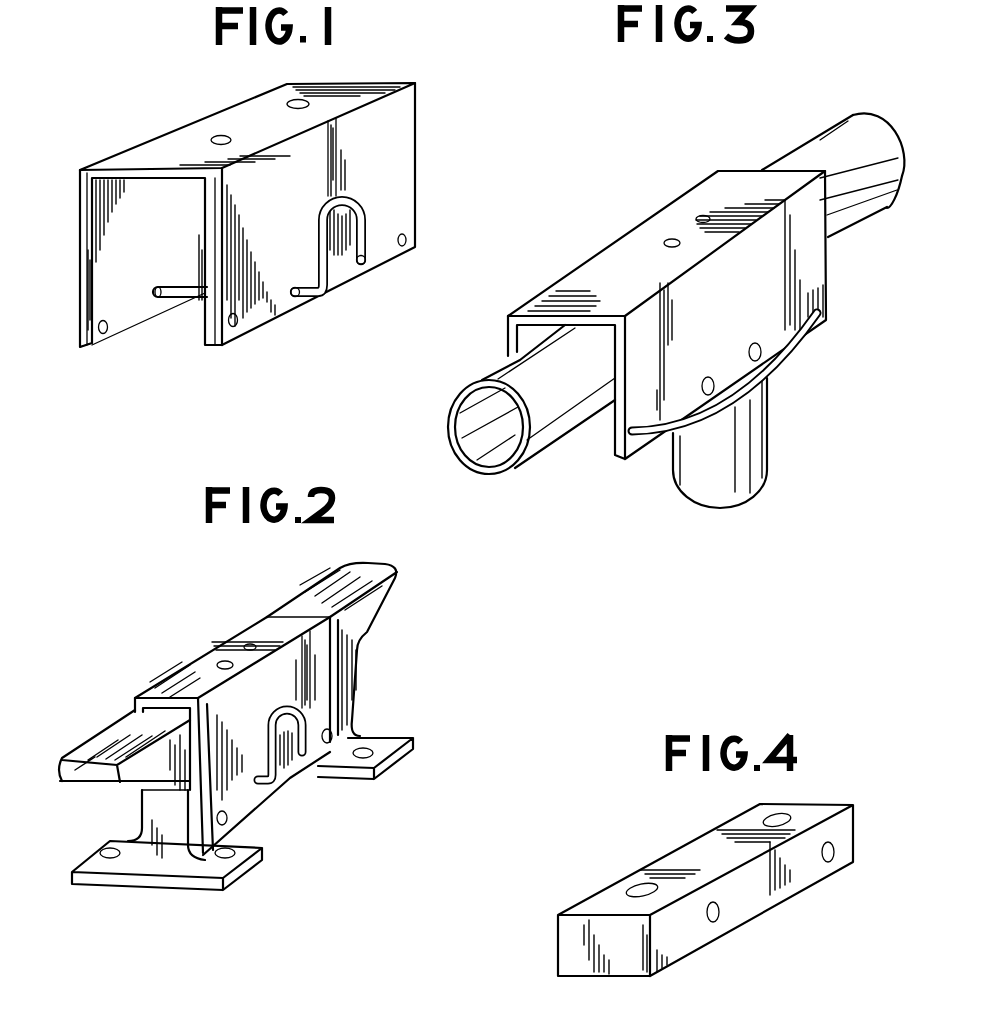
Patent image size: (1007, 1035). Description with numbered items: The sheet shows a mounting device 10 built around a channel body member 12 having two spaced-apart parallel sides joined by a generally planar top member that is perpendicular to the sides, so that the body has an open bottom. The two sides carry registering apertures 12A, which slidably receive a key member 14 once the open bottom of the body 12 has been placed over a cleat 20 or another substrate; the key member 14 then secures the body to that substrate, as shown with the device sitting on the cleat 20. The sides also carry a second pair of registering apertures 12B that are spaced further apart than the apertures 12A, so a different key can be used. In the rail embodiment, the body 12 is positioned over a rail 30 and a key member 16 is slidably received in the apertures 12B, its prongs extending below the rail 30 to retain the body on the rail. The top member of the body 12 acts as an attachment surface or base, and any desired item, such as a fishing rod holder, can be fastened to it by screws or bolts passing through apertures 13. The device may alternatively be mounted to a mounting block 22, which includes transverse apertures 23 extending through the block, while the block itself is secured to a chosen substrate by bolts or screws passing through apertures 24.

In FIG. 1, the mounting device 10 is at (291, 238).
In FIG. 2, the mounting device 10 is at (225, 731).
In FIG. 1, the channel body member 12 is at (402, 192).
In FIG. 3, the channel body member 12 is at (736, 196).
In FIG. 1, the registering apertures 12A is at (350, 267).
In FIG. 1, the registering apertures 12B is at (408, 248).
In FIG. 1, the apertures 13 is at (220, 135).
In FIG. 1, the key member 14 is at (337, 278).
In FIG. 2, the key member 14 is at (282, 788).
In FIG. 3, the key member 16 is at (799, 352).
In FIG. 2, the cleat 20 is at (374, 628).
In FIG. 4, the mounting block 22 is at (664, 847).
In FIG. 4, the transverse apertures 23 is at (790, 920).
In FIG. 4, the apertures 24 is at (782, 813).
In FIG. 3, the rail 30 is at (863, 218).